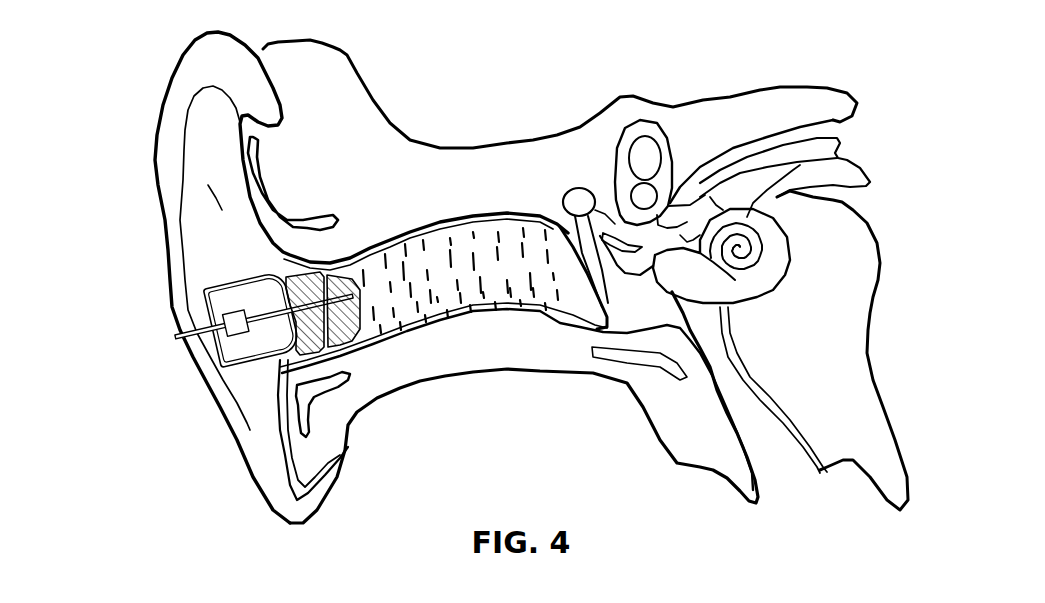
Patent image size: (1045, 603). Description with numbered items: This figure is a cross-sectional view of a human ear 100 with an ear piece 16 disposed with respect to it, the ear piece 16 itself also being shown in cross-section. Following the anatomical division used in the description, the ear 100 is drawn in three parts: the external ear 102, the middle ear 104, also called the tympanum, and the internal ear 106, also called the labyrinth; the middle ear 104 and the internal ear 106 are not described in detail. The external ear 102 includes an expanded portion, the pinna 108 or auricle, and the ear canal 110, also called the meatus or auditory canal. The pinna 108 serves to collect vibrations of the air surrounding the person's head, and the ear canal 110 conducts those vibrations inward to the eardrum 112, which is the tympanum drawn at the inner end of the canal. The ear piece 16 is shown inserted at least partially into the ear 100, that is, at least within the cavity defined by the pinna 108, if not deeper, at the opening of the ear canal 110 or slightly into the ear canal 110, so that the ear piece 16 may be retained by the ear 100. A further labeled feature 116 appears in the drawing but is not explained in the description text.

The ear 100 is at (168, 463).
The external ear 102 is at (110, 125).
The middle ear 104 is at (625, 336).
The internal ear 106 is at (742, 244).
The pinna 108 is at (176, 234).
The ear canal 110 is at (516, 354).
The eardrum 112 is at (583, 341).
The concha 116 is at (154, 193).
The ear piece 16 is at (230, 304).